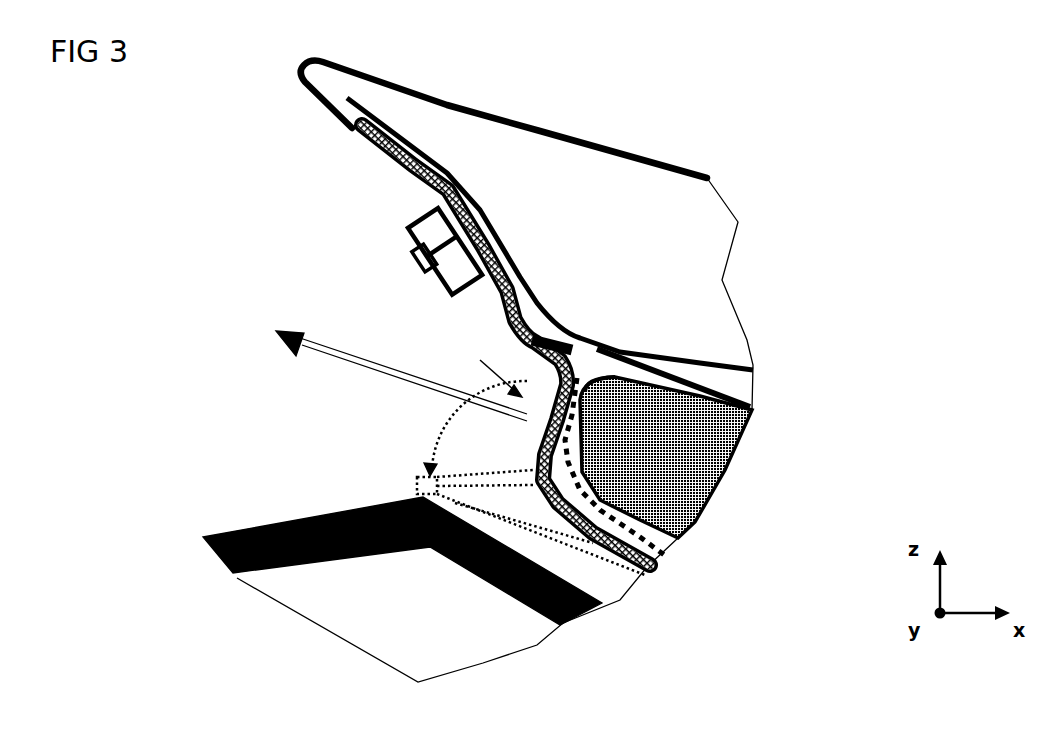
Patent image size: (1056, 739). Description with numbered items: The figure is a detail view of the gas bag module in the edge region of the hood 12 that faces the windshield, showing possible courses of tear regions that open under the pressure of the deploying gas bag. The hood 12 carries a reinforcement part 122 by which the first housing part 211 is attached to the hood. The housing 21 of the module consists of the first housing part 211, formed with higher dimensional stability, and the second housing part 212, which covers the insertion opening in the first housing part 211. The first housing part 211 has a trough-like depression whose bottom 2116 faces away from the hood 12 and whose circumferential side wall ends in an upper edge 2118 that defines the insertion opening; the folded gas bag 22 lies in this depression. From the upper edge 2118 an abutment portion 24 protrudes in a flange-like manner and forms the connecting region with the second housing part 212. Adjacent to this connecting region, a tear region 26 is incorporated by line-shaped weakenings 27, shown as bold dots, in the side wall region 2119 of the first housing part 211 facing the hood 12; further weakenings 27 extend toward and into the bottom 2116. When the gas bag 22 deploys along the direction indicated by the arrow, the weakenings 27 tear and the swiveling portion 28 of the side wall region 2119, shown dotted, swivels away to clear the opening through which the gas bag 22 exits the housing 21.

The hood 12 is at (658, 188).
The reinforcement part 122 is at (473, 197).
The housing 21 is at (522, 397).
The first housing part 211 is at (500, 297).
The second housing part 212 is at (660, 355).
The bottom 2116 is at (597, 537).
The upper edge 2118 is at (583, 340).
The side wall region 2119 is at (543, 434).
The gas bag 22 is at (703, 463).
The abutment portion 24 is at (550, 338).
The tear region 26 is at (491, 369).
The weakenings 27 is at (590, 362).
The swiveling portion 28 is at (507, 472).